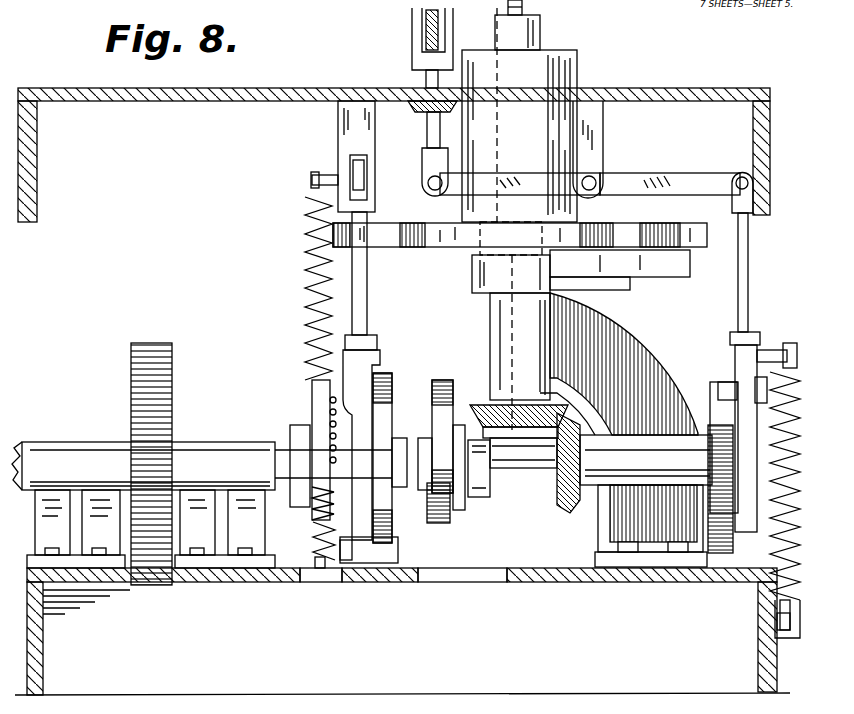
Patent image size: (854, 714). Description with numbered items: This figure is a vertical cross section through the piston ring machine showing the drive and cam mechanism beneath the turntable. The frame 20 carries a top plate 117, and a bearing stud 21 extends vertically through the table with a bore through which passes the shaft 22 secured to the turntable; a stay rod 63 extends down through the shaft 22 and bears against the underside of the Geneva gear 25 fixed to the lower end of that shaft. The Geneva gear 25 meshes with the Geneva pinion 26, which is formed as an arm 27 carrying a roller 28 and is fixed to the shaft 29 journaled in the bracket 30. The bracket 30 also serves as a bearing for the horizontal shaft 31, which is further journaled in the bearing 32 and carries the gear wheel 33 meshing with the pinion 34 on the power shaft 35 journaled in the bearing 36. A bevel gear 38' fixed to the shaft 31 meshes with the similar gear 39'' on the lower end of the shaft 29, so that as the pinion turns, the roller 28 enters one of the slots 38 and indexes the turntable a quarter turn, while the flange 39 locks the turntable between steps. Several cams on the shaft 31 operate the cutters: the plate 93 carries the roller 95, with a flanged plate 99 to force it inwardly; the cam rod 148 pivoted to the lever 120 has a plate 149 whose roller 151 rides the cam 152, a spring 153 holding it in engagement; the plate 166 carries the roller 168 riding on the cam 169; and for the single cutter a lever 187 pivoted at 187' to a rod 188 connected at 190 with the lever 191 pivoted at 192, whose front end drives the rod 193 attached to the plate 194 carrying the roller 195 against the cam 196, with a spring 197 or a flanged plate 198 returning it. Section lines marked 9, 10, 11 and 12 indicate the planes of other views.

The top plate 117 is at (186, 103).
The frame 20 is at (28, 186).
The bearing stud 21 is at (570, 70).
The shaft 22 is at (545, 45).
The stay rod 63 is at (525, 8).
The lever 187 is at (404, 60).
The pivot 187' is at (394, 37).
The rod 188 is at (426, 134).
The connection 190 is at (428, 182).
The pivot 192 is at (596, 181).
The lever 191 is at (651, 176).
The rod 193 is at (749, 292).
The section line 9 is at (437, 207).
The lever 120 is at (352, 168).
The spring 153 is at (310, 226).
The cam rod 148 is at (305, 290).
The slots 38 is at (377, 273).
The Geneva gear 25 is at (431, 249).
The flange 39 is at (511, 238).
The Geneva pinion 26 is at (478, 268).
The roller 28 is at (667, 240).
The arm 27 is at (617, 266).
The shaft 29 is at (516, 312).
The bracket 30 is at (603, 322).
The spring 197 is at (755, 438).
The flanged plate 198 is at (718, 556).
The roller 195 is at (730, 378).
The cam 196 is at (722, 410).
The plate 194 is at (755, 530).
The section line 10 is at (352, 338).
The section line 11 is at (397, 348).
The section line 12 is at (486, 350).
The bearing 32 is at (217, 447).
The gear wheel 33 is at (173, 376).
The pinion 34 is at (129, 444).
The power shaft 35 is at (33, 446).
The bearing 36 is at (77, 447).
The plate 166 is at (292, 430).
The cam 169 is at (312, 410).
The roller 168 is at (320, 482).
The plate 149 is at (358, 393).
The cam 152 is at (383, 418).
The roller 151 is at (398, 551).
The plate 93 is at (460, 427).
The roller 95 is at (443, 492).
The flanged plate 99 is at (447, 514).
The shaft 31 is at (527, 472).
The bevel gear 39'' is at (519, 428).
The bevel gear 38' is at (561, 480).